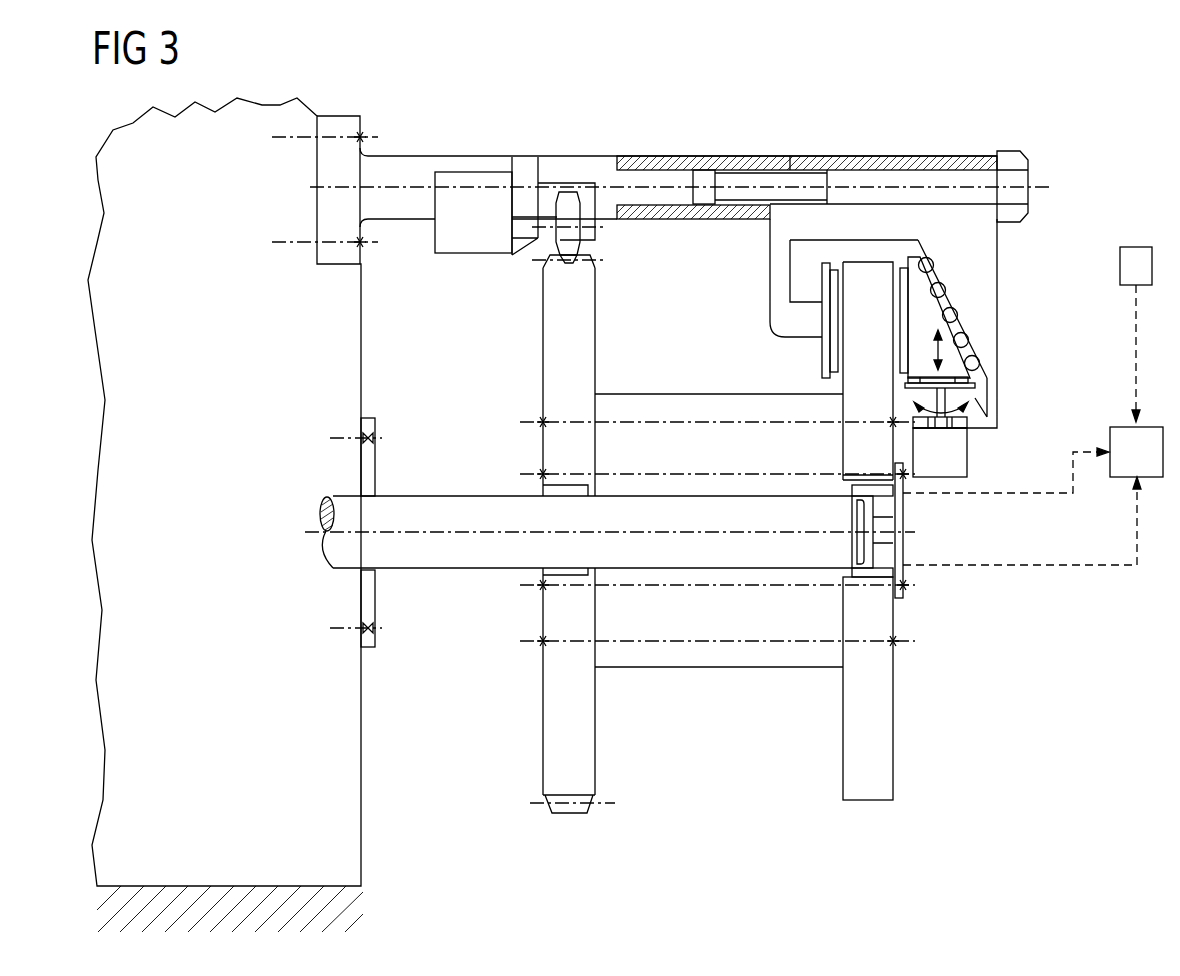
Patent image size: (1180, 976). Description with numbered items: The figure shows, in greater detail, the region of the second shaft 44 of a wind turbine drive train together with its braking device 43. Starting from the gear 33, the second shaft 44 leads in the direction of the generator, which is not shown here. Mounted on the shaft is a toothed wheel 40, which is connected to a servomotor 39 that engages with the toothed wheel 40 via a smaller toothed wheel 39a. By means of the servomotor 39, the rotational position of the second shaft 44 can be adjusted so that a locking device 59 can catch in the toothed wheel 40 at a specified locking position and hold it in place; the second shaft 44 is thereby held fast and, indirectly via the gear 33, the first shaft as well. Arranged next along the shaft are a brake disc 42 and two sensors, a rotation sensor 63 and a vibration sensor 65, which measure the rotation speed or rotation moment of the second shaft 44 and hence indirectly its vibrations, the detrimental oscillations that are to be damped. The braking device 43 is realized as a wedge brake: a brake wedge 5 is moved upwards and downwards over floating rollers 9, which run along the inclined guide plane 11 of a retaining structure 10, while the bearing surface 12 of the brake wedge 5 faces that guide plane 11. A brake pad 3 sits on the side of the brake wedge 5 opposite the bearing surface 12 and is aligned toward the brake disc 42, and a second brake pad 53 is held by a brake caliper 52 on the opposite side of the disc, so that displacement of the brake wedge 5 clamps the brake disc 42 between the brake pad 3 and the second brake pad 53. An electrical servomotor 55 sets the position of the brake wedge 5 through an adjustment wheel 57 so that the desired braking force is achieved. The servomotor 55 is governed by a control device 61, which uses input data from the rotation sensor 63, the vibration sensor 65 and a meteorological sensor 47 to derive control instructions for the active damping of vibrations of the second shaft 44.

The brake pad 3 is at (902, 300).
The brake wedge 5 is at (922, 350).
The floating rollers 9 is at (930, 268).
The retaining structure 10 is at (990, 345).
The guide plane 11 is at (955, 302).
The bearing surface 12 is at (962, 332).
The gear 33 is at (352, 355).
The servomotor 39 is at (473, 198).
The toothed wheel 39a is at (567, 198).
The toothed wheel 40 is at (585, 347).
The brake disc 42 is at (843, 447).
The braking device 43 is at (1072, 164).
The second shaft 44 is at (456, 560).
The meteorological sensor 47 is at (1120, 265).
The brake caliper 52 is at (768, 300).
The second brake pad 53 is at (825, 290).
The electrical servomotor 55 is at (968, 455).
The adjustment wheel 57 is at (918, 392).
The locking device 59 is at (712, 668).
The control device 61 is at (1120, 427).
The rotation sensor 63 is at (882, 493).
The vibration sensor 65 is at (882, 563).